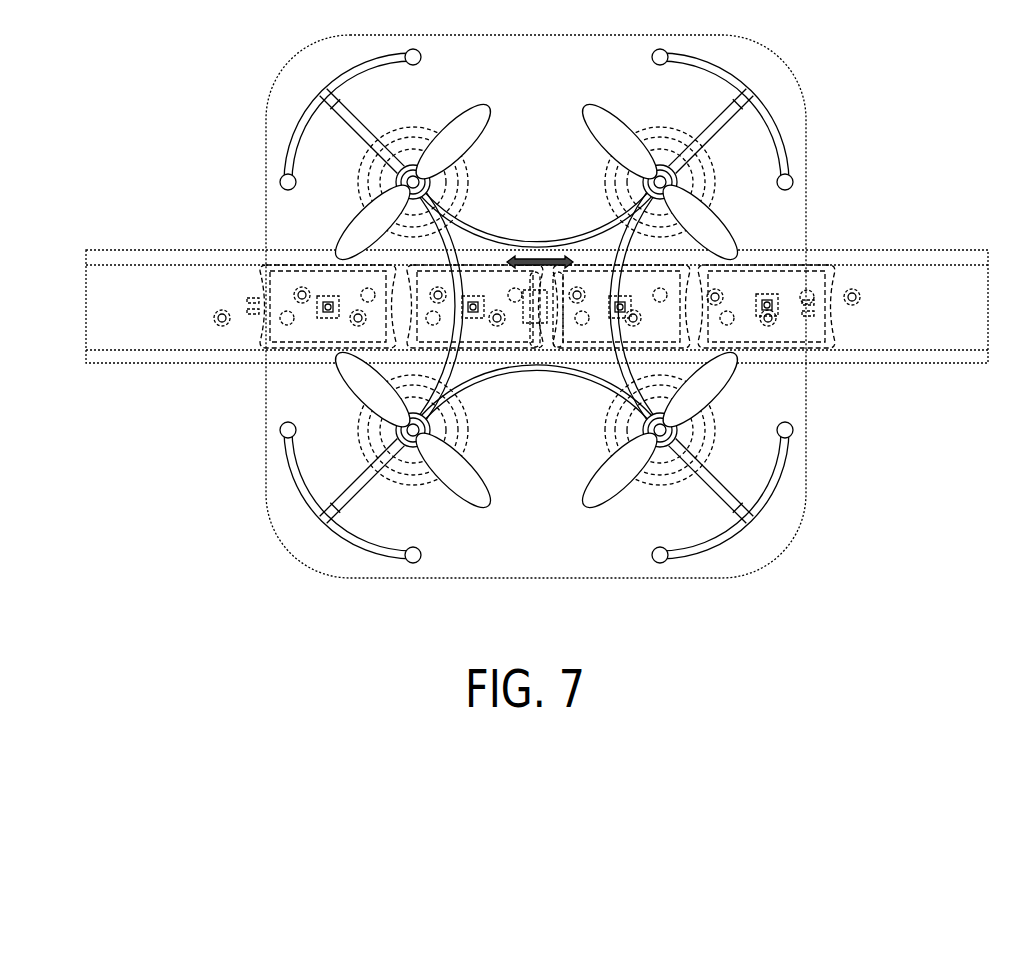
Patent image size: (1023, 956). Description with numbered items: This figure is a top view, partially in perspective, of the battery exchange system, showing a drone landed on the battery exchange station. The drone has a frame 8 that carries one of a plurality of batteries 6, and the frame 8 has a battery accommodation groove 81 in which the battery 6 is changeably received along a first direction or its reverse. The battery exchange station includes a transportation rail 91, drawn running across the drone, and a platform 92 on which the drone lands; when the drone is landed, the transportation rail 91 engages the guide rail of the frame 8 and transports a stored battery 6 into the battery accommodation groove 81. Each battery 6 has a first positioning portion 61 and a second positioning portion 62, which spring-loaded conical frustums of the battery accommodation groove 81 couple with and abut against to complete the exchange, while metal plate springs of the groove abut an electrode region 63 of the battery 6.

The battery 6 is at (487, 283).
The frame 8 is at (440, 212).
The first positioning portion 61 is at (729, 312).
The second positioning portion 62 is at (815, 299).
The electrode region 63 is at (767, 296).
The battery accommodation groove 81 is at (546, 352).
The transportation rail 91 is at (935, 285).
The platform 92 is at (602, 533).